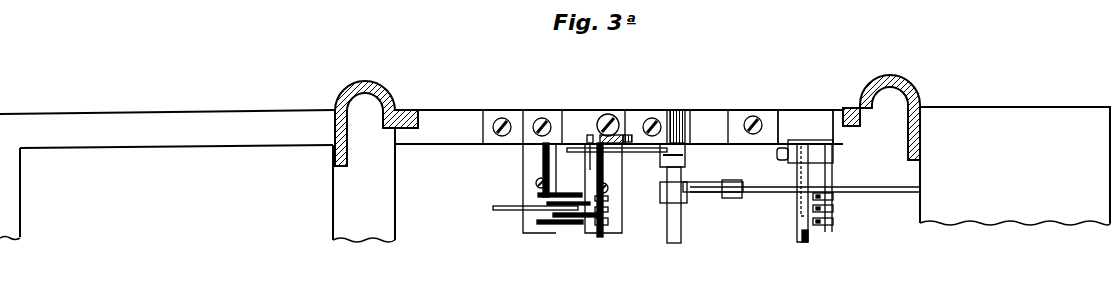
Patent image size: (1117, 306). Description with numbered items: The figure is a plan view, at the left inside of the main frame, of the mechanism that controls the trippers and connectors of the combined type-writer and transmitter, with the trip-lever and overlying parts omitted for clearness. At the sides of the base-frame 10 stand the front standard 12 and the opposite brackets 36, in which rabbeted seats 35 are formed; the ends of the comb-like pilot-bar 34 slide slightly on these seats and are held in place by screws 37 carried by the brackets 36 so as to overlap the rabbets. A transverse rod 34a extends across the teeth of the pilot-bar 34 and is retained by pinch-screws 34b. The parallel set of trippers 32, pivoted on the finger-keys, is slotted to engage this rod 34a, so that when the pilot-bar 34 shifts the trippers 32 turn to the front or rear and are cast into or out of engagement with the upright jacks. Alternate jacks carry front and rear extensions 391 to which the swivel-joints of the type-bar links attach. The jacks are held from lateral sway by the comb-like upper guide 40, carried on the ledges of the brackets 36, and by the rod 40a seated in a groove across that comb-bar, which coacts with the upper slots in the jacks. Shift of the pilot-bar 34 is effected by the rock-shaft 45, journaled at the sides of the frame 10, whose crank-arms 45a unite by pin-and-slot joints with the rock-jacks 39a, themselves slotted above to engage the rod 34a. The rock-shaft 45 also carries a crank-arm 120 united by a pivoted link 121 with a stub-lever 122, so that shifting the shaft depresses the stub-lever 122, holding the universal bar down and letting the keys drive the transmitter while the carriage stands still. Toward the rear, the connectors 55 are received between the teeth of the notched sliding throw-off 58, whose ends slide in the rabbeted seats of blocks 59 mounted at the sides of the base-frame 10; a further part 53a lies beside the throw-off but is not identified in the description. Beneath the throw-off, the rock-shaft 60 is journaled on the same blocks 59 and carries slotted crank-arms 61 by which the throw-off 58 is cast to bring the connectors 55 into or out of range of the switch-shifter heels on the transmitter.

The base-frame 10 is at (555, 174).
The front standard 12 is at (388, 93).
The trippers 32 is at (578, 236).
The pilot-bar 34 is at (617, 218).
The transverse rod 34a is at (603, 170).
The pinch-screws 34b is at (609, 188).
The rabbeted seats 35 is at (628, 134).
The brackets 36 is at (577, 112).
The screws 37 is at (613, 124).
The rock-jacks 39a is at (575, 148).
The upper guide 40 is at (527, 168).
The rod 40a is at (548, 236).
The rock-shaft 45 is at (681, 225).
The crank-arms 45a is at (682, 142).
The contact plate 53a is at (826, 172).
The connectors 55 is at (835, 222).
The sliding throw-off 58 is at (808, 225).
The blocks 59 is at (805, 127).
The rock-shaft 60 is at (797, 238).
The crank-arms 61 is at (813, 142).
The crank-arm 120 is at (698, 182).
The link 121 is at (733, 198).
The stub-lever 122 is at (750, 187).
The extensions 391 is at (493, 233).